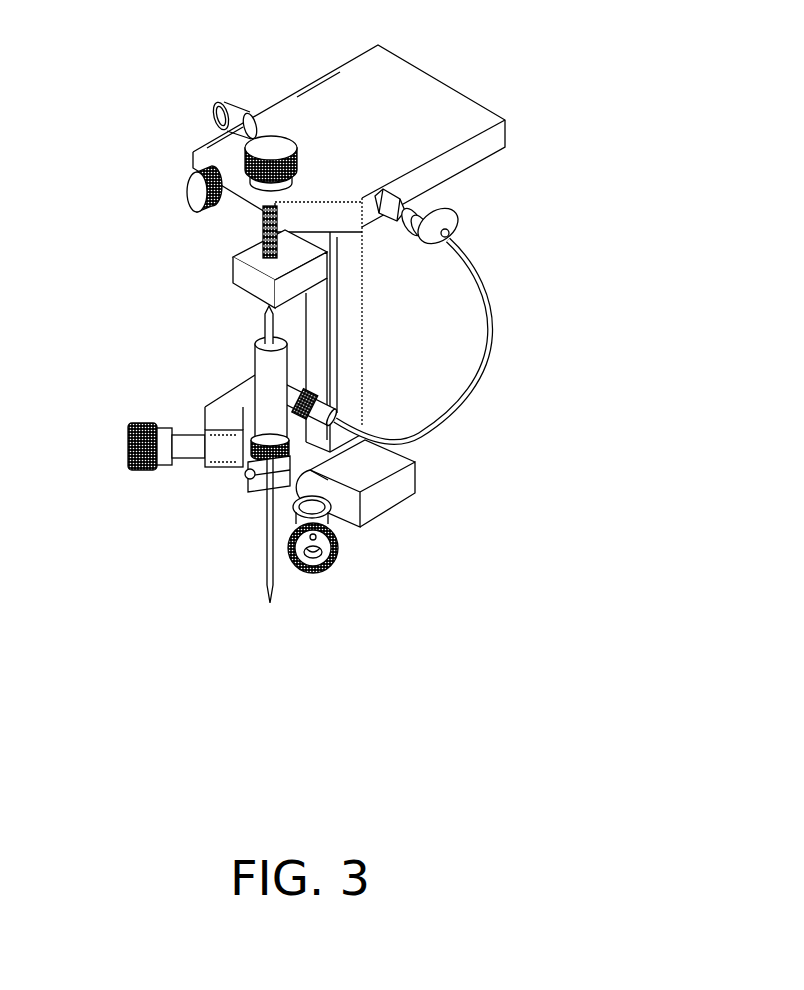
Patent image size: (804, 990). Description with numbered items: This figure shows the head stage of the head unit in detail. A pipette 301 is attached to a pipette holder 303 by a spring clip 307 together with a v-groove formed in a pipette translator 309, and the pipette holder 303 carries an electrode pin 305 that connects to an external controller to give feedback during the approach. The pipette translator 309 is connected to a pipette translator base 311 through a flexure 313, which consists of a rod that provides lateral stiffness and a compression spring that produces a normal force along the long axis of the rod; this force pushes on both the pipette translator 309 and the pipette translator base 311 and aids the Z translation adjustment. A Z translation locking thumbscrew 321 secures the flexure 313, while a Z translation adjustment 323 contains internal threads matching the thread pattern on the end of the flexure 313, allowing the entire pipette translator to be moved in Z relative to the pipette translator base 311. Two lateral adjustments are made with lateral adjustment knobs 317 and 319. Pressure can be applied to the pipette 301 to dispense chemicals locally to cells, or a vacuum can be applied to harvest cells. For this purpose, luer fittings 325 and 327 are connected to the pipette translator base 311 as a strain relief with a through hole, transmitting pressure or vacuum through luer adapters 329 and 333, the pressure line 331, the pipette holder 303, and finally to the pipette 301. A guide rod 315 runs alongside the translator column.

The pipette 301 is at (255, 597).
The pipette holder 303 is at (253, 363).
The electrode pin 305 is at (260, 322).
The spring clip 307 is at (257, 490).
The pipette translator 309 is at (308, 278).
The pipette translator base 311 is at (408, 85).
The flexure 313 is at (257, 238).
The guide rod 315 is at (340, 345).
The lateral adjustment knob 317 is at (337, 575).
The lateral adjustment knob 319 is at (125, 445).
The Z translation locking thumbscrew 321 is at (185, 182).
The Z translation adjustment 323 is at (268, 140).
The luer fitting 325 is at (210, 108).
The luer fitting 327 is at (430, 205).
The luer adapter 329 is at (470, 232).
The pressure line 331 is at (485, 383).
The luer adapter 333 is at (330, 397).